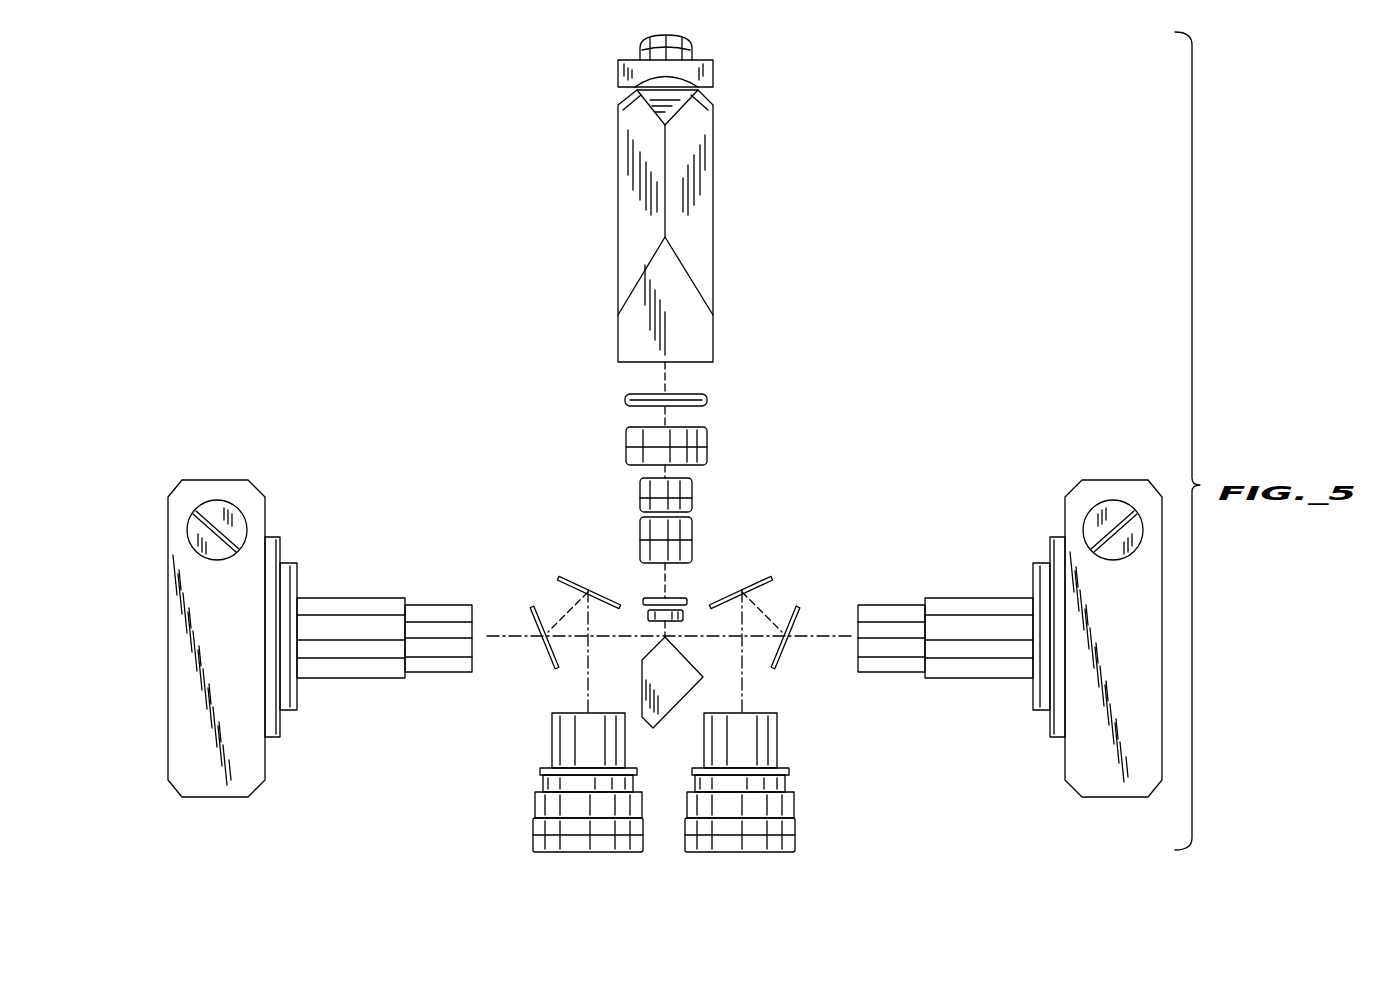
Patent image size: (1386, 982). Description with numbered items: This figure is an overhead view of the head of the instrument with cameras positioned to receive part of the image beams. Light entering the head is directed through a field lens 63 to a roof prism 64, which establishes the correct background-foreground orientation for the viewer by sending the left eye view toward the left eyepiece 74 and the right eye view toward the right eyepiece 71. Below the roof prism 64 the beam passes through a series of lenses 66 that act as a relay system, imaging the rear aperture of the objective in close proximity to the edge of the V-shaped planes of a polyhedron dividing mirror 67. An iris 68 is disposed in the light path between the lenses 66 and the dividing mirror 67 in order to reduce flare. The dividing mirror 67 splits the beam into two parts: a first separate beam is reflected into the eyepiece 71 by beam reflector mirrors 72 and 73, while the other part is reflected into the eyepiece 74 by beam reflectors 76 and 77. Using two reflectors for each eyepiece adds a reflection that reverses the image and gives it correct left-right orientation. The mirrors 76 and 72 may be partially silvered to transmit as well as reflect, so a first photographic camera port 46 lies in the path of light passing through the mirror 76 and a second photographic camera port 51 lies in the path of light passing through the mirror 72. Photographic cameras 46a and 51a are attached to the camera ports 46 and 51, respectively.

The field lens 63 is at (686, 78).
The roof prism 64 is at (713, 210).
The lenses 66 is at (715, 388).
The iris 68 is at (667, 598).
The polyhedron dividing mirror 67 is at (673, 683).
The beam reflector 77 is at (575, 580).
The beam reflector mirror 73 is at (753, 580).
The beam reflector 76 is at (542, 655).
The beam reflector mirror 72 is at (787, 655).
The left eyepiece 74 is at (533, 830).
The right eyepiece 71 is at (795, 830).
The first photographic camera port 46 is at (433, 603).
The photographic camera 46a is at (220, 480).
The second photographic camera port 51 is at (880, 603).
The photographic camera 51a is at (1092, 480).